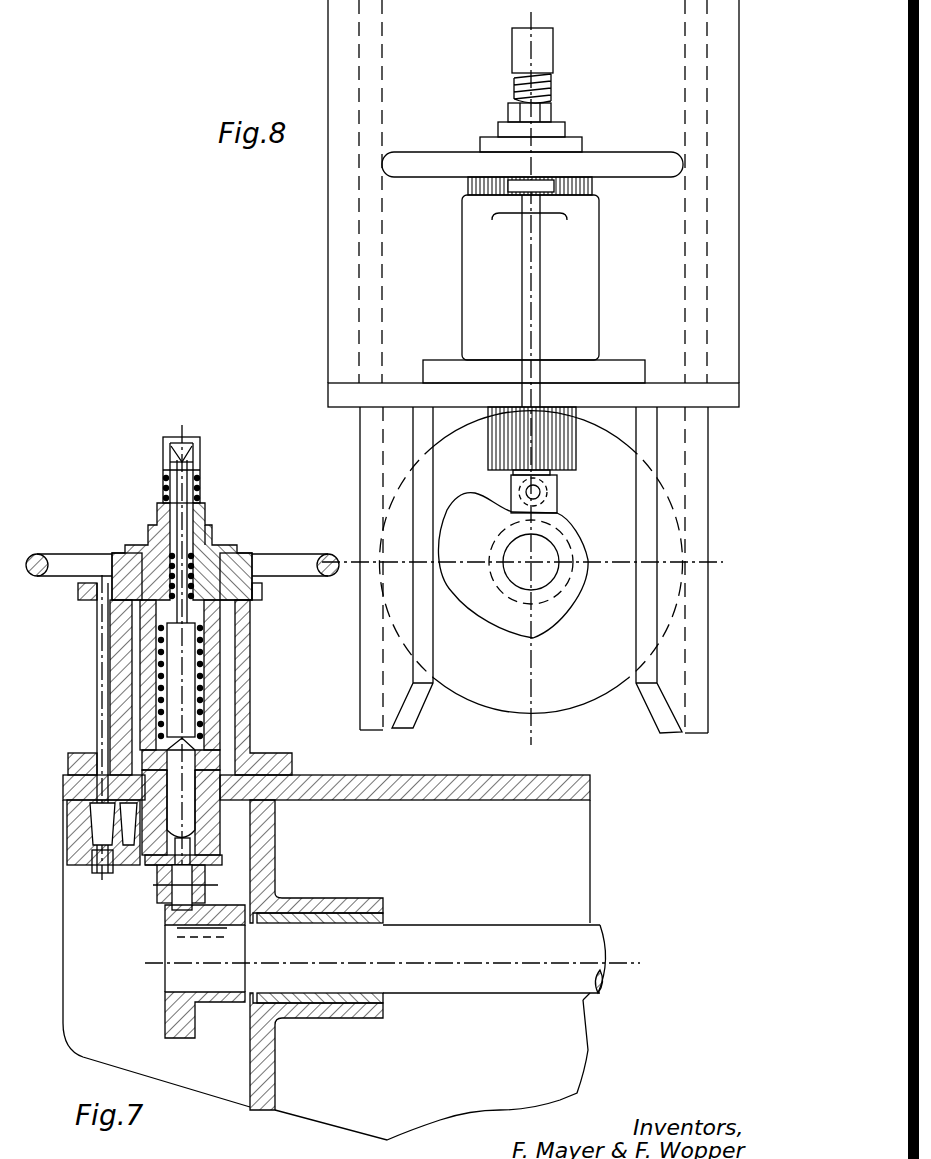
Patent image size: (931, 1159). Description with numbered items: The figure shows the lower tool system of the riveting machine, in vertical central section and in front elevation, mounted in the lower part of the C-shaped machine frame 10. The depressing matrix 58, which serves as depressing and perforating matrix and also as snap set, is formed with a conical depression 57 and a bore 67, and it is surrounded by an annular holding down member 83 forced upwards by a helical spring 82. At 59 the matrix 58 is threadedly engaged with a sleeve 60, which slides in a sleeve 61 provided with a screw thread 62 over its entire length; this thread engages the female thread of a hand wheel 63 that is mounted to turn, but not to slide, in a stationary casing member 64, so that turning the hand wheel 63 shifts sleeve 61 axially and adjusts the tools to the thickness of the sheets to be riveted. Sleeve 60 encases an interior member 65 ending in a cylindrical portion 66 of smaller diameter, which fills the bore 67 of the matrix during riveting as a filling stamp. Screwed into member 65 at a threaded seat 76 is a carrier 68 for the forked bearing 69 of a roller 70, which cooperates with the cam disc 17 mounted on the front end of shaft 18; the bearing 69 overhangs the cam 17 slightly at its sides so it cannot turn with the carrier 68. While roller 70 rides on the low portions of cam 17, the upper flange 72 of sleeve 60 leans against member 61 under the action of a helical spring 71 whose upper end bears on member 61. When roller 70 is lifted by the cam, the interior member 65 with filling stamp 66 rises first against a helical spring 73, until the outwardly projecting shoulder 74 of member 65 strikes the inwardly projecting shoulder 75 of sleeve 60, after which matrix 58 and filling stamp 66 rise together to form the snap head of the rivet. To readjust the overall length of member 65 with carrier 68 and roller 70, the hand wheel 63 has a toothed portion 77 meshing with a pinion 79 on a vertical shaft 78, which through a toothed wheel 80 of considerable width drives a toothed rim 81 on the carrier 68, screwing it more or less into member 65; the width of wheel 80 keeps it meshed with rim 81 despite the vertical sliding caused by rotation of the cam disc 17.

In FIG. 8, the machine frame 10 is at (338, 348).
In FIG. 8, the cam disc 17 is at (500, 620).
In FIG. 7, the cam disc 17 is at (167, 1013).
In FIG. 7, the shaft 18 is at (442, 928).
In FIG. 7, the conical depression 57 is at (186, 440).
In FIG. 8, the depressing matrix 58 is at (552, 112).
In FIG. 7, the depressing matrix 58 is at (201, 456).
In FIG. 7, the threaded engagement 59 is at (210, 530).
In FIG. 7, the sleeve 60 is at (158, 540).
In FIG. 8, the sleeve 61 is at (486, 138).
In FIG. 7, the sleeve 61 is at (246, 560).
In FIG. 7, the screw thread 62 is at (220, 682).
In FIG. 8, the hand wheel 63 is at (626, 158).
In FIG. 7, the hand wheel 63 is at (323, 576).
In FIG. 8, the stationary casing member 64 is at (599, 331).
In FIG. 7, the stationary casing member 64 is at (250, 717).
In FIG. 7, the interior member 65 is at (196, 645).
In FIG. 7, the cylindrical portion 66 is at (202, 484).
In FIG. 7, the bore 67 is at (165, 455).
In FIG. 7, the carrier 68 is at (152, 866).
In FIG. 8, the forked bearing 69 is at (558, 499).
In FIG. 7, the forked bearing 69 is at (205, 878).
In FIG. 8, the roller 70 is at (519, 490).
In FIG. 7, the roller 70 is at (172, 907).
In FIG. 7, the helical spring 71 is at (220, 677).
In FIG. 8, the upper flange 72 is at (566, 129).
In FIG. 7, the upper flange 72 is at (213, 537).
In FIG. 7, the helical spring 73 is at (124, 555).
In FIG. 8, the outwardly projecting shoulder 74 is at (541, 297).
In FIG. 7, the outwardly projecting shoulder 74 is at (210, 800).
In FIG. 7, the inwardly projecting shoulder 75 is at (210, 750).
In FIG. 7, the threaded seat 76 is at (194, 822).
In FIG. 8, the toothed portion 77 is at (593, 188).
In FIG. 7, the toothed portion 77 is at (240, 592).
In FIG. 7, the vertical shaft 78 is at (98, 688).
In FIG. 8, the pinion 79 is at (508, 189).
In FIG. 7, the pinion 79 is at (82, 587).
In FIG. 8, the toothed wheel 80 is at (577, 450).
In FIG. 7, the toothed wheel 80 is at (70, 840).
In FIG. 7, the toothed rim 81 is at (222, 859).
In FIG. 8, the helical spring 82 is at (553, 88).
In FIG. 7, the helical spring 82 is at (163, 482).
In FIG. 8, the annular holding down member 83 is at (551, 50).
In FIG. 7, the annular holding down member 83 is at (163, 440).